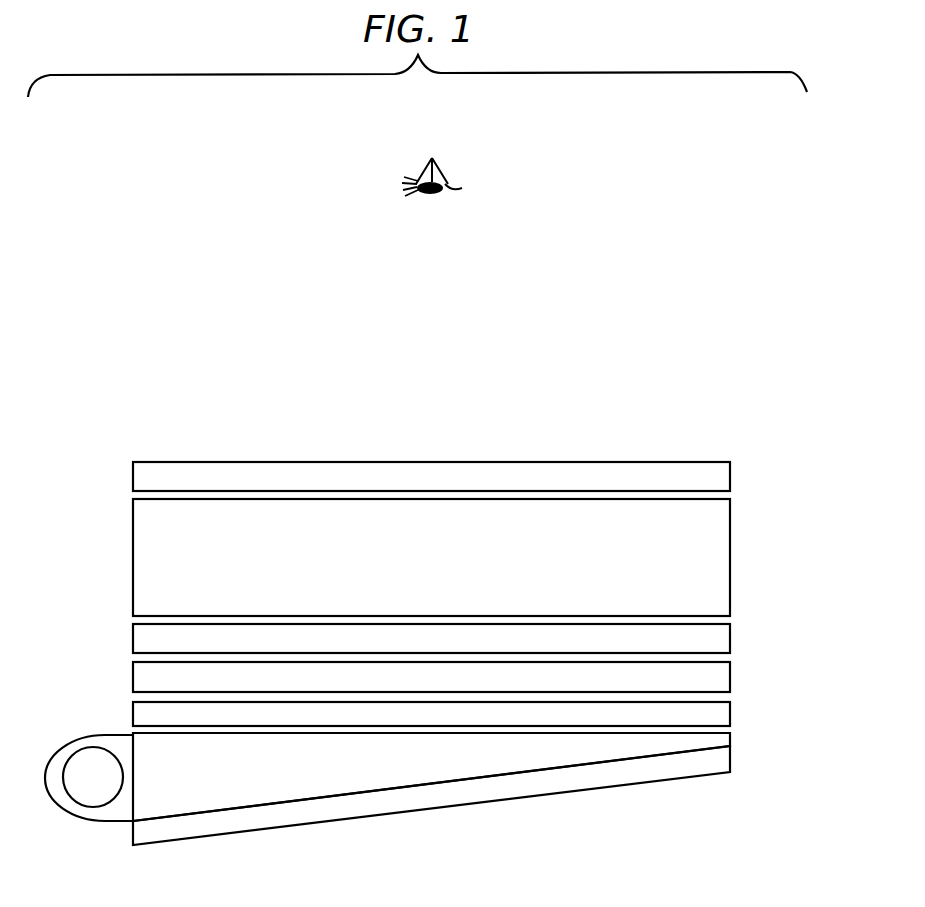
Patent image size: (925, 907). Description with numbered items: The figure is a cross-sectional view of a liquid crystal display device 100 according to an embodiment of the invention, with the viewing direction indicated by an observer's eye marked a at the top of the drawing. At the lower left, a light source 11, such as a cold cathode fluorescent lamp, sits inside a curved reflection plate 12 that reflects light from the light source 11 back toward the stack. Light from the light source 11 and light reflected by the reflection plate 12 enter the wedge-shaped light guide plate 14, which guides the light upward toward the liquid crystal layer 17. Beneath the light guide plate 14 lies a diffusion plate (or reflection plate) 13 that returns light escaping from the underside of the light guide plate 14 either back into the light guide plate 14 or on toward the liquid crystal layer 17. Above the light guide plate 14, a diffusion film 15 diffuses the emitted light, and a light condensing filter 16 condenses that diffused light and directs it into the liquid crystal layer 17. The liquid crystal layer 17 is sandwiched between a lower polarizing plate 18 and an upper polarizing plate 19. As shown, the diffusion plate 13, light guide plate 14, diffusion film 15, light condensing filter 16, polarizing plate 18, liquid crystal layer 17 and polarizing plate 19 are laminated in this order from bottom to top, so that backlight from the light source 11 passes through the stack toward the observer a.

The liquid crystal display device 100 is at (488, 440).
The observer a is at (447, 185).
The light source 11 is at (97, 790).
The reflection plate 12 is at (95, 742).
The diffusion plate 13 is at (495, 802).
The light guide plate 14 is at (257, 796).
The diffusion film 15 is at (730, 712).
The light condensing filter 16 is at (730, 676).
The liquid crystal layer 17 is at (730, 556).
The polarizing plate 18 is at (730, 631).
The polarizing plate 19 is at (730, 474).